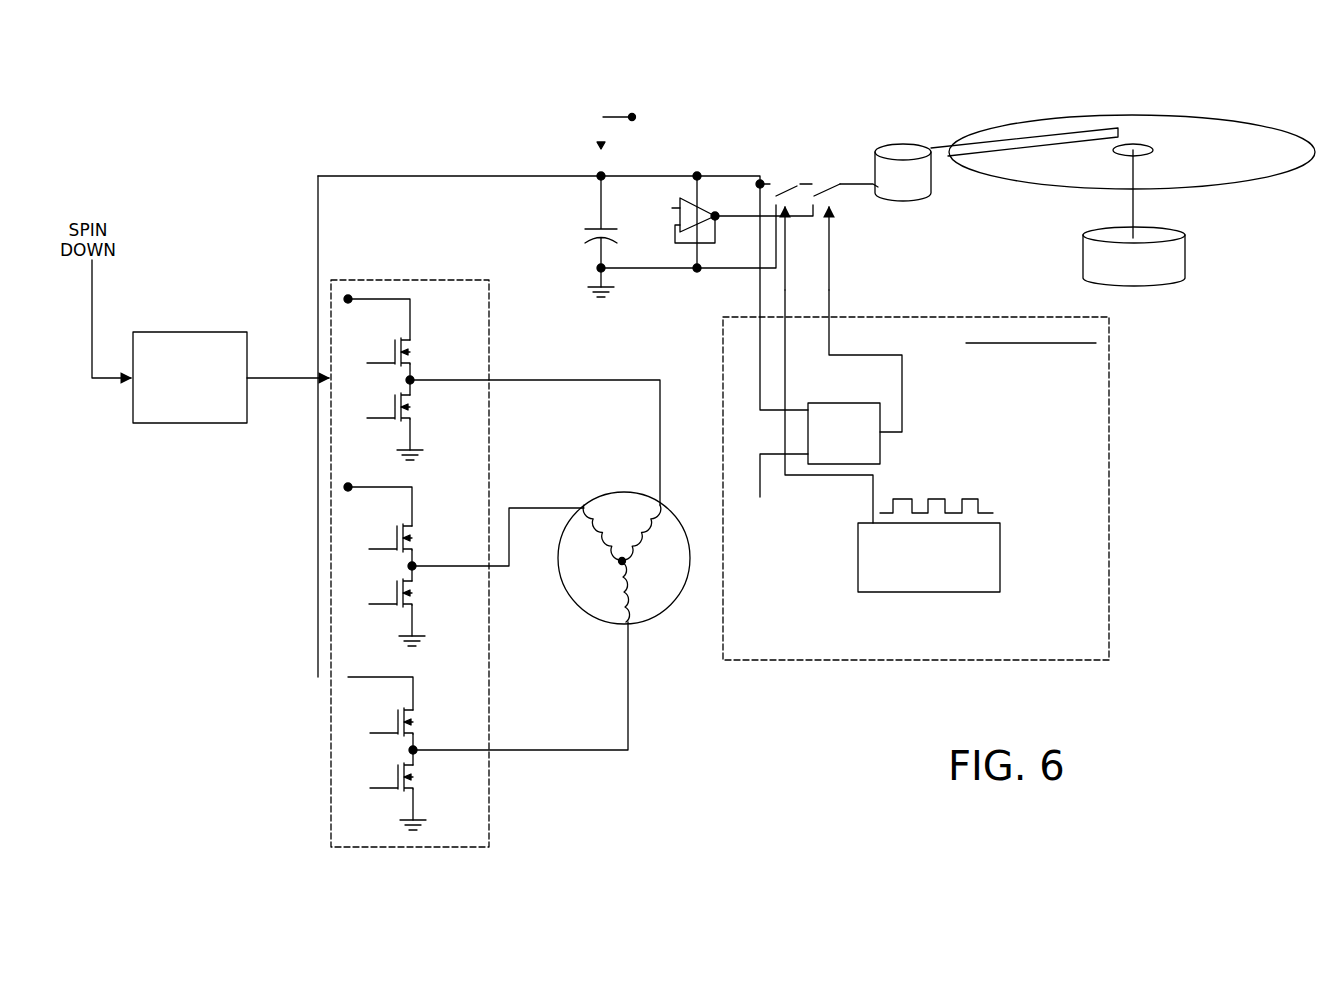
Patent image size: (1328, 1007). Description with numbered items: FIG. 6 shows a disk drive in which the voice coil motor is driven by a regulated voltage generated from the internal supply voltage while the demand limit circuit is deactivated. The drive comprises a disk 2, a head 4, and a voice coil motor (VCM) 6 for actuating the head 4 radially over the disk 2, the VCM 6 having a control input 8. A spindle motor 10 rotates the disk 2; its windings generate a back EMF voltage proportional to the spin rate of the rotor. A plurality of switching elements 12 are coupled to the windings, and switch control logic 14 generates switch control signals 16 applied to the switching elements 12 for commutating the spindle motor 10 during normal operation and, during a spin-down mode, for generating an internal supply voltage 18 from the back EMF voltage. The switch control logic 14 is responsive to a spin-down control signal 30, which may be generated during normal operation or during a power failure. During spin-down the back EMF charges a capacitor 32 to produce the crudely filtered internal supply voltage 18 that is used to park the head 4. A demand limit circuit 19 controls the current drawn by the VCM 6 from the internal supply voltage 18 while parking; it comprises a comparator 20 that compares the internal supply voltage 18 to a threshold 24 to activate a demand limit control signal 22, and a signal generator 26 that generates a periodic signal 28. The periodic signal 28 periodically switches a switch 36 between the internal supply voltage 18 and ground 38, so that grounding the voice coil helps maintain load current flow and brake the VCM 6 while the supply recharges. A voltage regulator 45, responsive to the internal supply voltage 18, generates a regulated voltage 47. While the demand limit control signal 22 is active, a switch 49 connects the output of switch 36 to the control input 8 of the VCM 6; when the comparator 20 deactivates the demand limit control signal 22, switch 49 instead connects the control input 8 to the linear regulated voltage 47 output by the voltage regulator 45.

The disk 2 is at (1292, 134).
The head 4 is at (1118, 130).
The voice coil motor 6 is at (899, 143).
The control input 8 is at (862, 190).
The spindle motor 10 is at (1185, 262).
The switching elements 12 is at (489, 330).
The switch control logic 14 is at (190, 332).
The switch control signals 16 is at (285, 377).
The internal supply voltage 18 is at (720, 176).
The demand limit circuit 19 is at (1109, 403).
The comparator 20 is at (844, 402).
The demand limit control signal 22 is at (902, 402).
The threshold 24 is at (762, 490).
The signal generator 26 is at (930, 592).
The periodic signal 28 is at (873, 505).
The spin-down control signal 30 is at (92, 277).
The capacitor 32 is at (578, 236).
The switch 36 is at (782, 180).
The ground 38 is at (652, 268).
The voltage regulator 45 is at (703, 214).
The regulated voltage 47 is at (740, 218).
The switch 49 is at (828, 180).